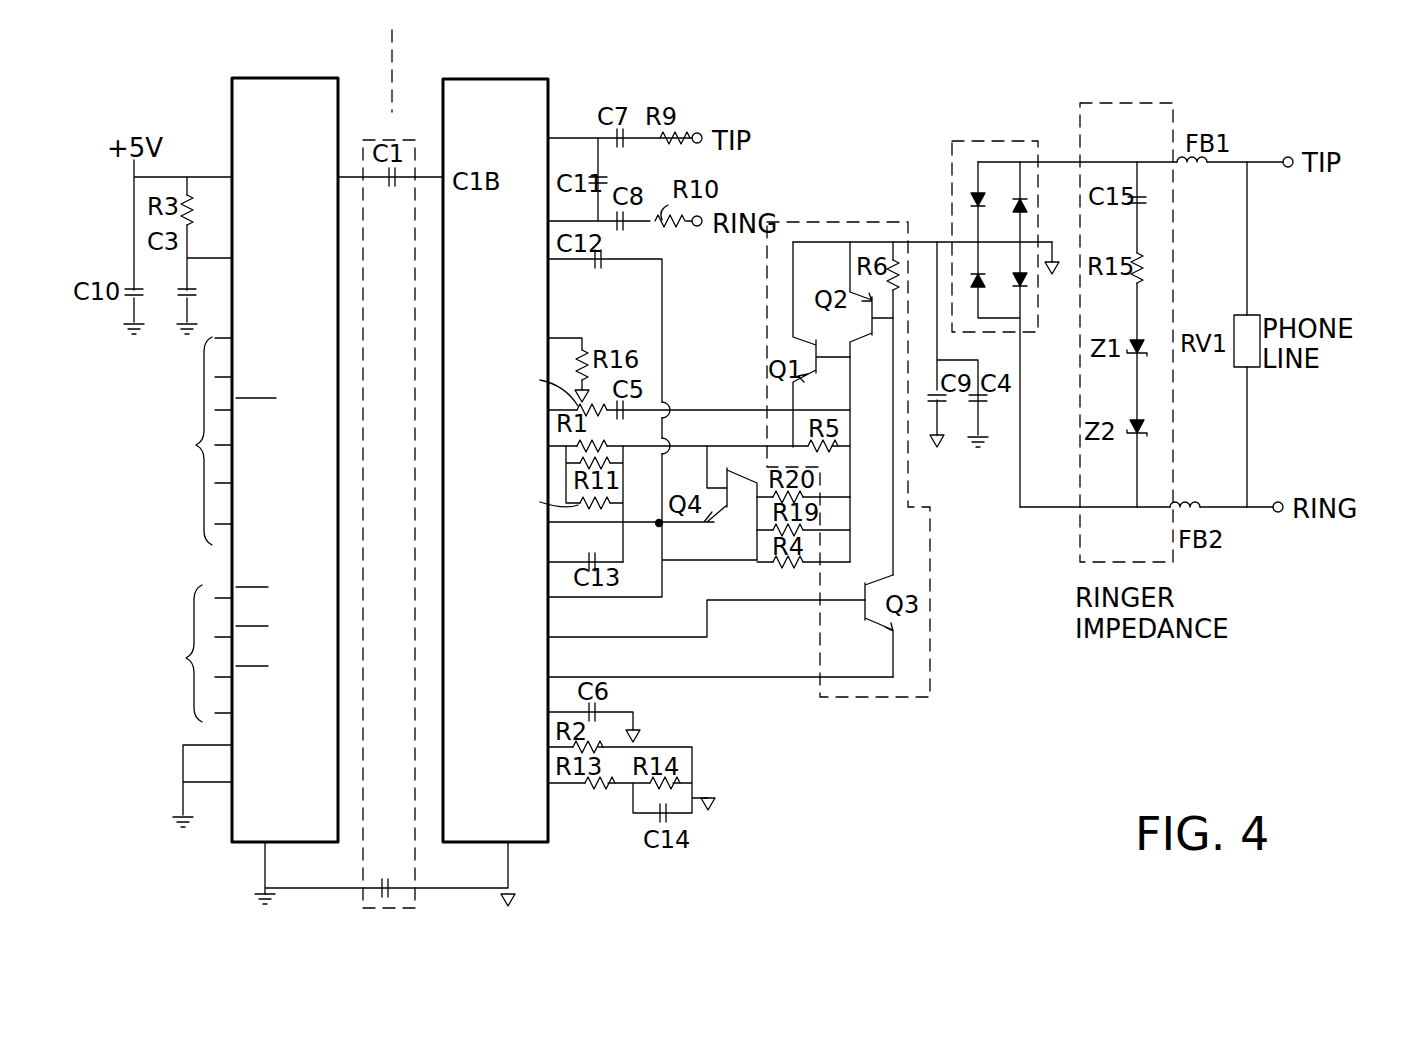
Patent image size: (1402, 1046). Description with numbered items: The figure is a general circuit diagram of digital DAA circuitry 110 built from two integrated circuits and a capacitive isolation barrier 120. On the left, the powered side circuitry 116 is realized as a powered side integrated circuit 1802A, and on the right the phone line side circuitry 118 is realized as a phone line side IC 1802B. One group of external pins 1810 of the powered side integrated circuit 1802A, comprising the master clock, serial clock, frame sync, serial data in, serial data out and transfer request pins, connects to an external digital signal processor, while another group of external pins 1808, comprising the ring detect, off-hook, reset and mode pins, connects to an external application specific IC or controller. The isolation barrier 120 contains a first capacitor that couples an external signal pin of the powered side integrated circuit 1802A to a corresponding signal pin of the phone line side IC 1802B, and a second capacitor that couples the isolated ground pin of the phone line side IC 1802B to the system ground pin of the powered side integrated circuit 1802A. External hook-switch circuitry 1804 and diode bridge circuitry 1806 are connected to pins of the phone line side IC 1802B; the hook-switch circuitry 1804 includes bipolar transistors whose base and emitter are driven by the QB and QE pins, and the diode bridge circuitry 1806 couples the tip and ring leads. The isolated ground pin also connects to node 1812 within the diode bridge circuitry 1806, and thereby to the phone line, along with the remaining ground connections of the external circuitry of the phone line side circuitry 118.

The digital DAA circuitry 110 is at (820, 144).
The powered side circuitry 116 is at (380, 58).
The phone line side circuitry 118 is at (405, 58).
The isolation barrier 120 is at (412, 871).
The powered side integrated circuit 1802A is at (248, 78).
The phone line side IC 1802B is at (530, 79).
The hook-switch circuitry 1804 is at (930, 677).
The diode bridge circuitry 1806 is at (952, 141).
The external pins 1808 is at (168, 653).
The external pins 1810 is at (175, 441).
The node 1812 is at (1052, 248).